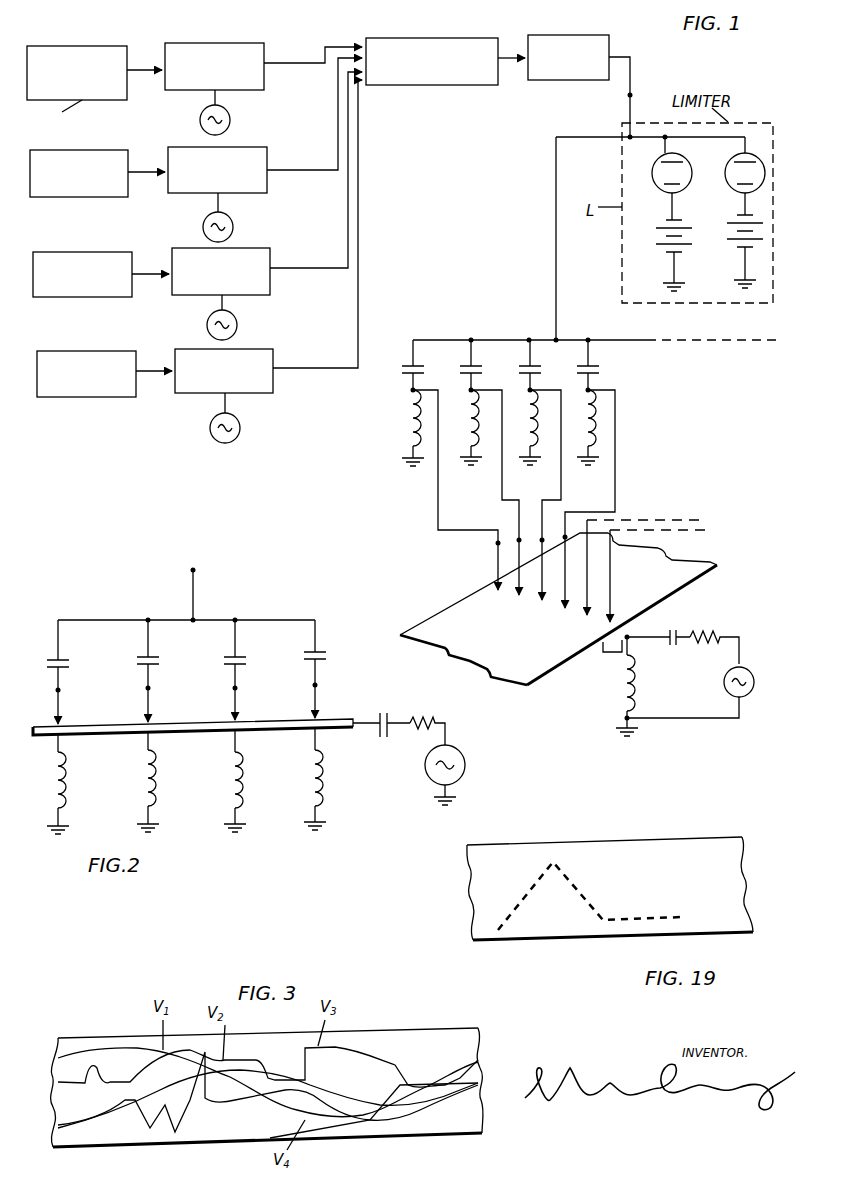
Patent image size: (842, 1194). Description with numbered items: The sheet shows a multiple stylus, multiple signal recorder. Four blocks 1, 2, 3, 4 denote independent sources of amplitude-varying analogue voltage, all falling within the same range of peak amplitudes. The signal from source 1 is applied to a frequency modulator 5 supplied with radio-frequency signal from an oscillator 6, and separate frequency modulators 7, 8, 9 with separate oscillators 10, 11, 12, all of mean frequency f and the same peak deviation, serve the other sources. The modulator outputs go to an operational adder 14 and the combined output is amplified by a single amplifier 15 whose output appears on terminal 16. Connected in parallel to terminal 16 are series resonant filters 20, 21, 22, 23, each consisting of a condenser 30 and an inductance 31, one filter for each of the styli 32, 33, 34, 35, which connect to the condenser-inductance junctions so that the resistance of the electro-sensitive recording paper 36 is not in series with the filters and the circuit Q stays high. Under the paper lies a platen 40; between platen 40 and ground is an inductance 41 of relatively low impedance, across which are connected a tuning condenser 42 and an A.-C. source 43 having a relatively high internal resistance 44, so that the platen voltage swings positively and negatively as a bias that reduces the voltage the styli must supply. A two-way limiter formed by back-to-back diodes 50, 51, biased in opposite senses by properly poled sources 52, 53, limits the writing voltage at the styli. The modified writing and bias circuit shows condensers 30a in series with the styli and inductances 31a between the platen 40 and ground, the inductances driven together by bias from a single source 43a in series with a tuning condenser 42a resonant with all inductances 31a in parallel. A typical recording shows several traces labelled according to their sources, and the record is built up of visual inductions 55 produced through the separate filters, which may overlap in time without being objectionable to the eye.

In FIG. 1, the analogue signal source 1 is at (105, 45).
In FIG. 1, the analogue signal source 2 is at (122, 151).
In FIG. 1, the analogue signal source 3 is at (122, 253).
In FIG. 1, the analogue signal source 4 is at (118, 355).
In FIG. 1, the frequency modulator 5 is at (249, 46).
In FIG. 1, the oscillator 6 is at (200, 120).
In FIG. 1, the frequency modulator 7 is at (258, 182).
In FIG. 1, the frequency modulator 8 is at (183, 297).
In FIG. 1, the frequency modulator 9 is at (197, 400).
In FIG. 1, the oscillator 10 is at (203, 228).
In FIG. 1, the oscillator 11 is at (207, 326).
In FIG. 1, the oscillator 12 is at (210, 436).
In FIG. 1, the operational adder 14 is at (472, 78).
In FIG. 2, the operational adder 14 is at (429, 722).
In FIG. 1, the amplifier 15 is at (600, 45).
In FIG. 1, the terminal 16 is at (631, 95).
In FIG. 2, the terminal 16 is at (195, 572).
In FIG. 1, the series resonant filter 20 is at (400, 420).
In FIG. 1, the series resonant filter 21 is at (460, 432).
In FIG. 1, the series resonant filter 22 is at (518, 433).
In FIG. 1, the series resonant filter 23 is at (577, 434).
In FIG. 1, the condenser 30 is at (408, 376).
In FIG. 2, the condenser 30a is at (52, 656).
In FIG. 1, the inductance 31 is at (402, 446).
In FIG. 2, the inductance 31a is at (66, 780).
In FIG. 1, the stylus 32 is at (497, 557).
In FIG. 2, the stylus 32 is at (57, 705).
In FIG. 1, the stylus 33 is at (517, 541).
In FIG. 2, the stylus 33 is at (151, 693).
In FIG. 1, the stylus 34 is at (541, 576).
In FIG. 2, the stylus 34 is at (238, 692).
In FIG. 1, the stylus 35 is at (566, 586).
In FIG. 2, the stylus 35 is at (315, 702).
In FIG. 1, the electro-sensitive recording paper 36 is at (453, 614).
In FIG. 2, the electro-sensitive recording paper 36 is at (336, 720).
In FIG. 3, the electro-sensitive recording paper 36 is at (400, 1035).
In FIG. 1, the platen 40 is at (634, 630).
In FIG. 2, the platen 40 is at (50, 740).
In FIG. 1, the inductance 41 is at (612, 690).
In FIG. 1, the tuning condenser 42 is at (673, 646).
In FIG. 2, the tuning condenser 42a is at (385, 712).
In FIG. 1, the A.-C. source 43 is at (750, 698).
In FIG. 2, the bias source 43a is at (463, 767).
In FIG. 1, the internal resistance 44 is at (708, 636).
In FIG. 1, the diode 50 is at (655, 166).
In FIG. 1, the diode 51 is at (726, 163).
In FIG. 1, the biasing source 52 is at (660, 238).
In FIG. 1, the biasing source 53 is at (730, 243).
In FIG. 19, the visual induction 55 is at (508, 918).